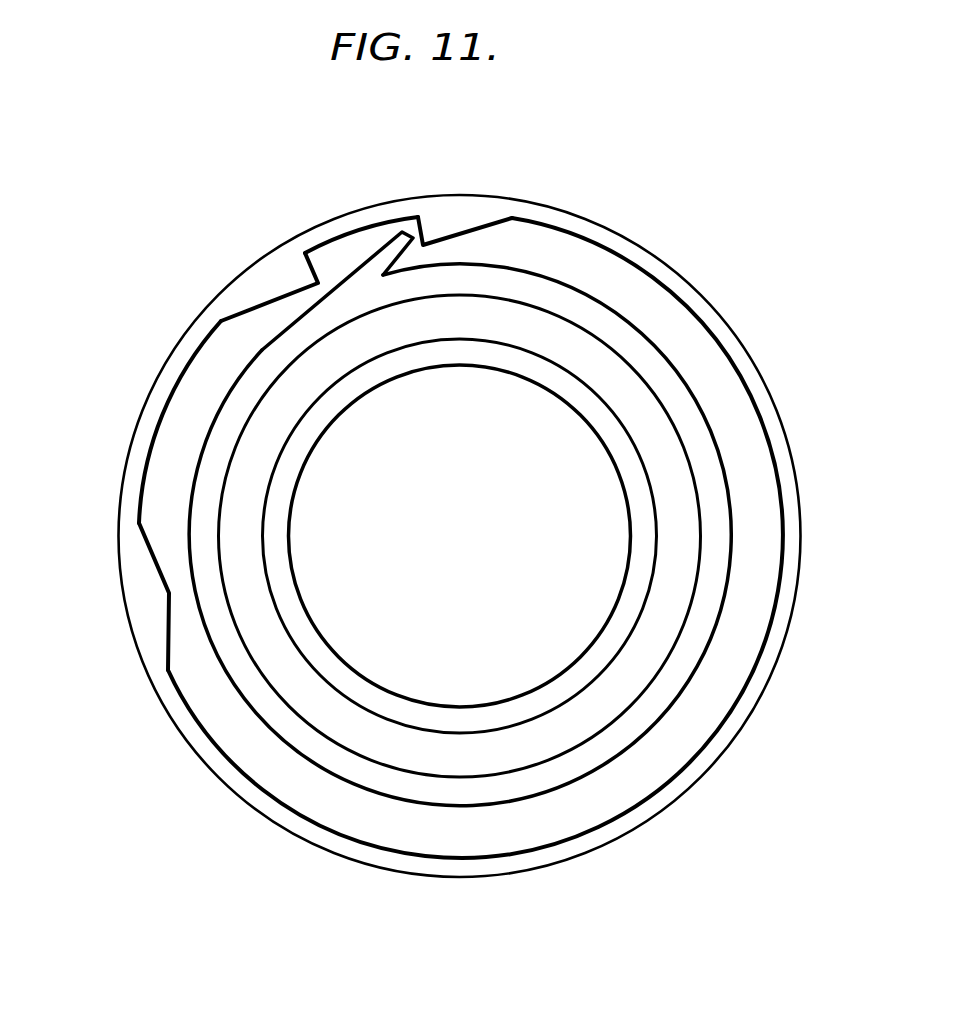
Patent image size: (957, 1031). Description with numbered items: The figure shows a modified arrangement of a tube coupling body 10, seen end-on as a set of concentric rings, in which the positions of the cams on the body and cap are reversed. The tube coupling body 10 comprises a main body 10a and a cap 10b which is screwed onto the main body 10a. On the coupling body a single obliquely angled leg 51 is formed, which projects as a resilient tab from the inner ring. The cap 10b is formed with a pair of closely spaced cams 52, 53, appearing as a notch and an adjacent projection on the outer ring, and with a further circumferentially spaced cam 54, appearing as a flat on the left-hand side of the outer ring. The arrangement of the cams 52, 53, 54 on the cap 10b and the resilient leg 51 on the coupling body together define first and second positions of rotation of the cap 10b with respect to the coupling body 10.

The tube coupling body 10 is at (657, 430).
The main body 10a is at (479, 486).
The cap 10b is at (415, 502).
The obliquely angled leg 51 is at (393, 242).
The cam 52 is at (453, 222).
The cam 53 is at (265, 278).
The cam 54 is at (148, 590).